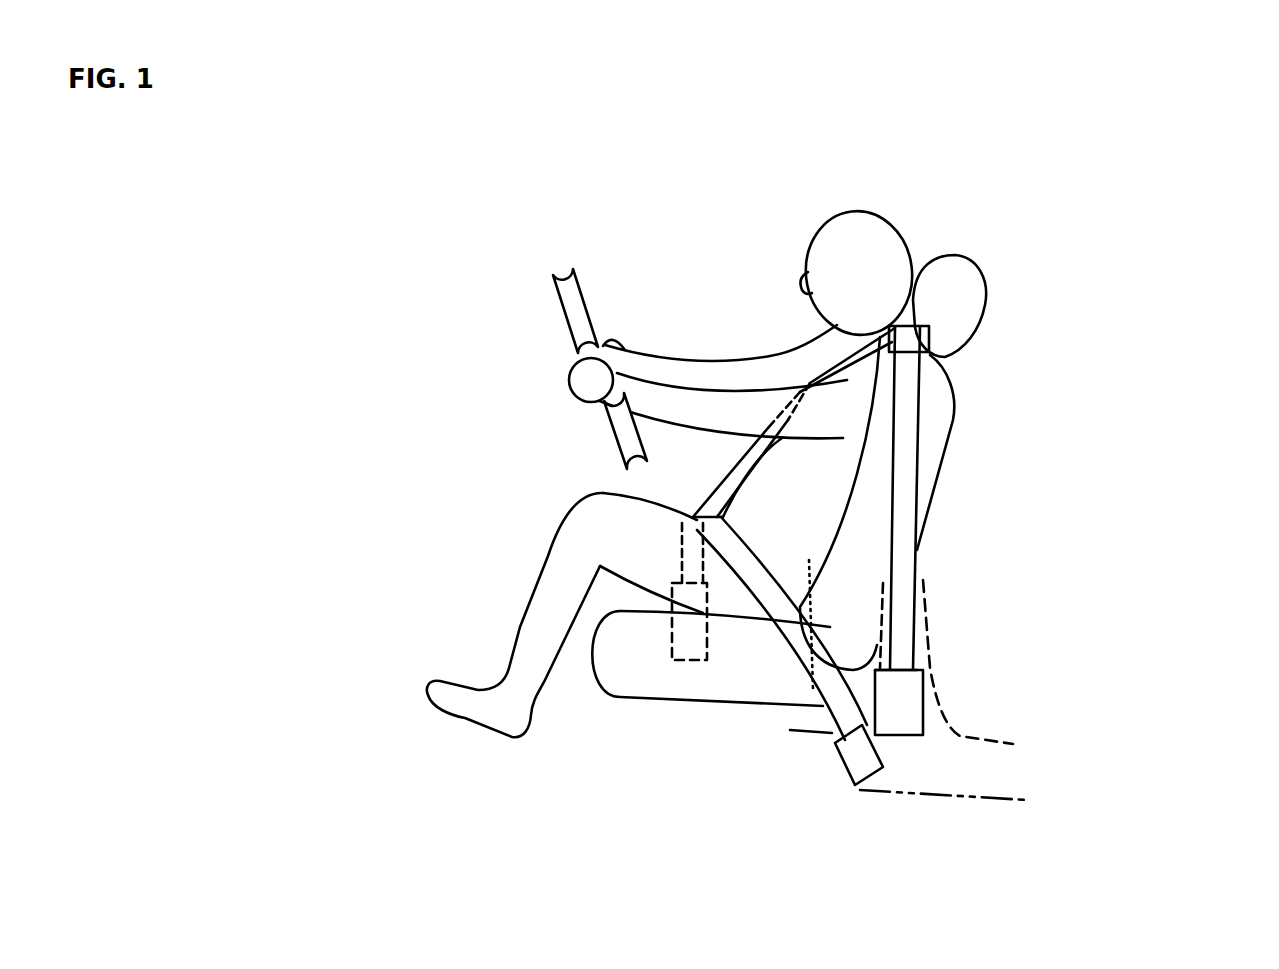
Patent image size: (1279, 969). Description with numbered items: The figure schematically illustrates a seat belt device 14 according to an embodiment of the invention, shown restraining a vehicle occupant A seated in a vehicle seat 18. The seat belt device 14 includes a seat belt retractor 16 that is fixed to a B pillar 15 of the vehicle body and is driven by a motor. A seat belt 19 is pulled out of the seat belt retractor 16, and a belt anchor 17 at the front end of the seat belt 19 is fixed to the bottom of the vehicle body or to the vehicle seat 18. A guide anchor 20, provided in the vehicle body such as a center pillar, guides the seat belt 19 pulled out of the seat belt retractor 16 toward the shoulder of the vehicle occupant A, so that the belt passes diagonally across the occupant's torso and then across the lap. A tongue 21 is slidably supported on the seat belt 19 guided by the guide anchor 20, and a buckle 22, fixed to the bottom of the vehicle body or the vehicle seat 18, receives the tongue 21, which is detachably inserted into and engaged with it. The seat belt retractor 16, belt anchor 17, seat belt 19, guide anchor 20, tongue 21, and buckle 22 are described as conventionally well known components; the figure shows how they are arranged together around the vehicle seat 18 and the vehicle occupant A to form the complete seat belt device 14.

The vehicle occupant A is at (770, 356).
The seat belt device 14 is at (1185, 434).
The B pillar 15 is at (930, 633).
The seat belt retractor 16 is at (905, 737).
The belt anchor 17 is at (845, 763).
The vehicle seat 18 is at (948, 428).
The seat belt 19 is at (917, 567).
The guide anchor 20 is at (920, 325).
The tongue 21 is at (687, 583).
The buckle 22 is at (688, 647).